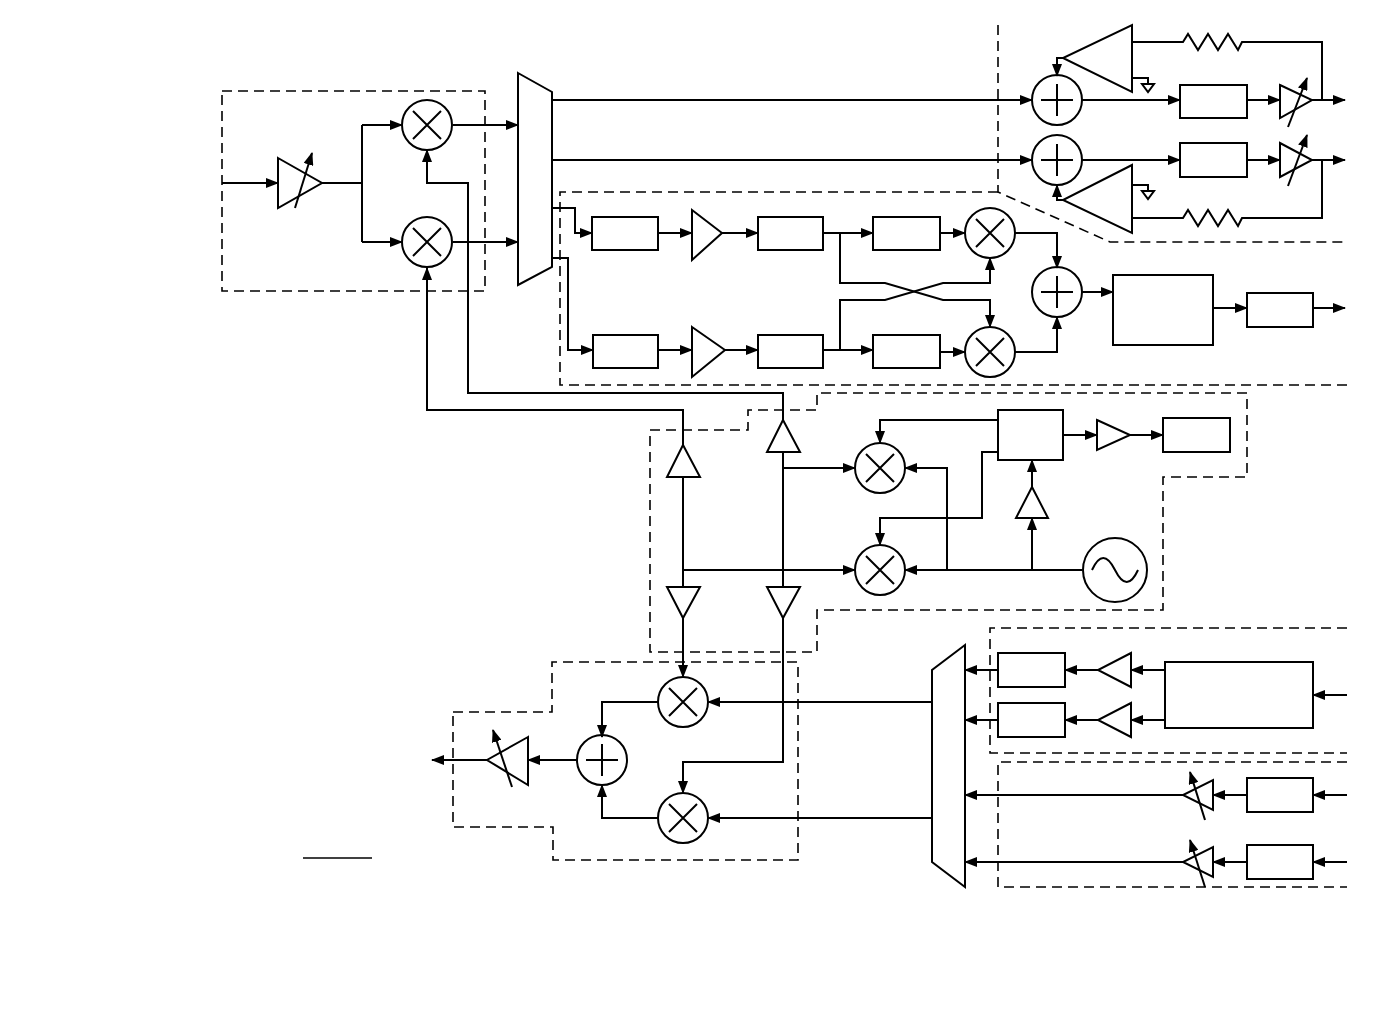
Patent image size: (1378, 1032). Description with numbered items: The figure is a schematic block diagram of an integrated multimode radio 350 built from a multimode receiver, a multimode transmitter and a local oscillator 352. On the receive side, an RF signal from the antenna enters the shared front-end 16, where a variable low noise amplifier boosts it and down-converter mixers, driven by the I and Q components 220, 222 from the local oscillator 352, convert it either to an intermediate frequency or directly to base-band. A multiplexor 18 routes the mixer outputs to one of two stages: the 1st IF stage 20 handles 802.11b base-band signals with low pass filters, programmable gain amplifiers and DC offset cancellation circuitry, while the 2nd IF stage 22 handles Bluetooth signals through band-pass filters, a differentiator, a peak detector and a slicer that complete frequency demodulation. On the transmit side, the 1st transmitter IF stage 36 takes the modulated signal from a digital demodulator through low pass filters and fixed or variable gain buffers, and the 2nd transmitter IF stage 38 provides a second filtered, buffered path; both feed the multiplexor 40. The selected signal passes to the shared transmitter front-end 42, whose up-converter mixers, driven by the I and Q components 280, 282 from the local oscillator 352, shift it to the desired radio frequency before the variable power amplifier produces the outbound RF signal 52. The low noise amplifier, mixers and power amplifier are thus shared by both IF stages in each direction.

The shared front-end 16 is at (317, 87).
The mux 18 is at (775, 211).
The 1st IF stage 20 is at (993, 76).
The 2nd IF stage 22 is at (1257, 385).
The 1st transmitter IF stage 36 is at (1192, 627).
The 2nd transmitter IF stage 38 is at (1104, 767).
The multiplexor 40 is at (948, 766).
The shared transmitter front-end 42 is at (521, 711).
The outbound RF signal 52 is at (390, 761).
The I component 220 is at (787, 393).
The Q component 222 is at (522, 414).
The I component 280 is at (786, 641).
The Q component 282 is at (680, 637).
The integrated multimode radio 350 is at (505, 891).
The local oscillator 352 is at (649, 578).